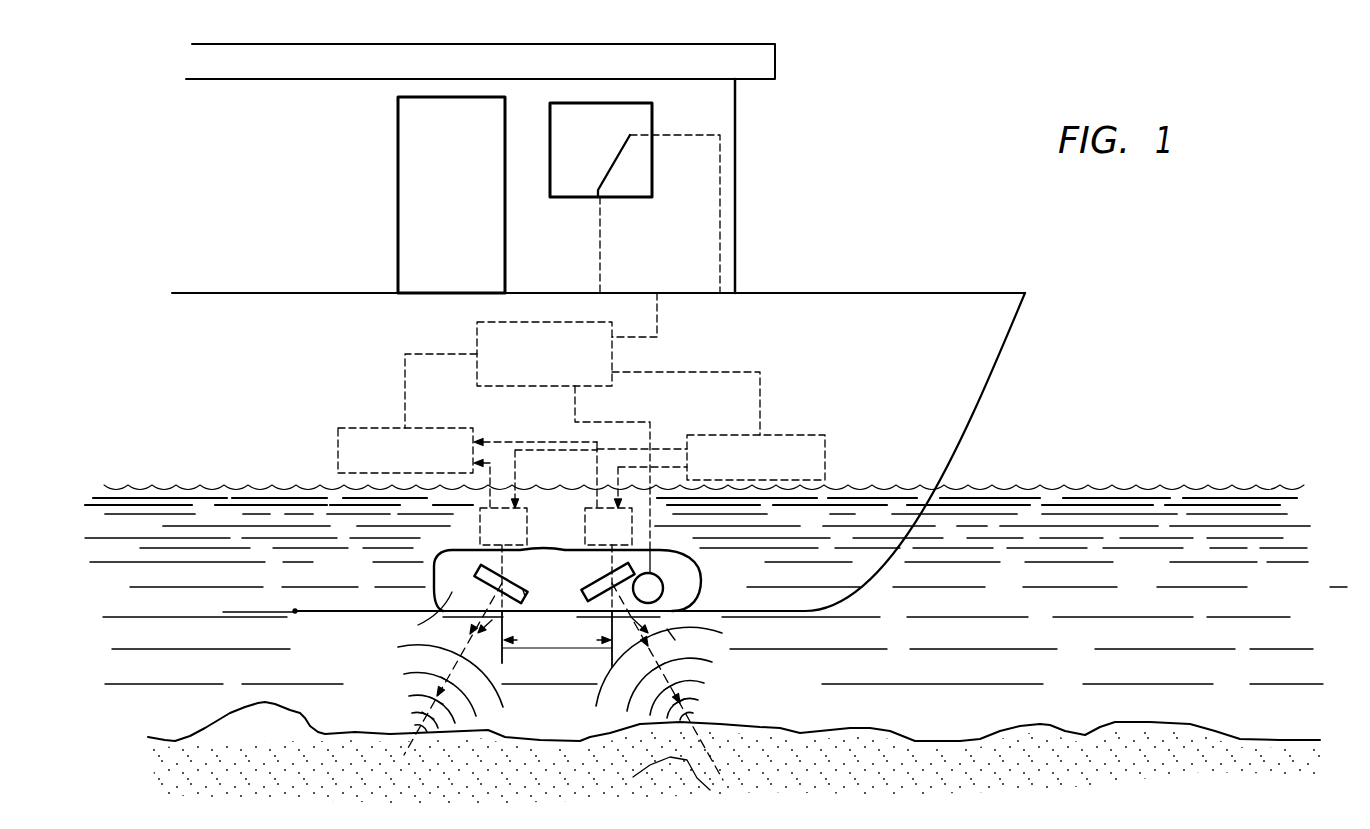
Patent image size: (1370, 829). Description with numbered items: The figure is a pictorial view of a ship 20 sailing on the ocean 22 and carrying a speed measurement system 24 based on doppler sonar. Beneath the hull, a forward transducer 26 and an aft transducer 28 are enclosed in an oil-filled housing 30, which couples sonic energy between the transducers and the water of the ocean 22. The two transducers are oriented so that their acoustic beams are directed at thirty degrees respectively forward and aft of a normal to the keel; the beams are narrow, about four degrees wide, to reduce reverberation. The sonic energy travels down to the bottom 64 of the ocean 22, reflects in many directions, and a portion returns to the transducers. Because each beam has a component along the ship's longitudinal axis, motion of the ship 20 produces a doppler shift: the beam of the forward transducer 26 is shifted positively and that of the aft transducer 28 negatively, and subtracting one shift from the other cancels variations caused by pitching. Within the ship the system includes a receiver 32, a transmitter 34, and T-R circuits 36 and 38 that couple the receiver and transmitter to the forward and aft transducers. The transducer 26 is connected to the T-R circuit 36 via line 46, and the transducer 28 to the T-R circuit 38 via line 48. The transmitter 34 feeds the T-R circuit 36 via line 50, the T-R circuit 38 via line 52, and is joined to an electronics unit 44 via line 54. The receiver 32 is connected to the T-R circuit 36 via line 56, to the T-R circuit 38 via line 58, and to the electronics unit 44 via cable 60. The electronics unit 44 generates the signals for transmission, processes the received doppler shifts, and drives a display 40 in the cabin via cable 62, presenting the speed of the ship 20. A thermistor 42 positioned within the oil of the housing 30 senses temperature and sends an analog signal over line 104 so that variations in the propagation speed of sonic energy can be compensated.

The ship 20 is at (1013, 323).
The ocean 22 is at (1146, 581).
The speed measurement system 24 is at (151, 155).
The forward transducer 26 is at (575, 632).
The aft transducer 28 is at (523, 588).
The oil-filled housing 30 is at (692, 554).
The receiver 32 is at (354, 426).
The transmitter 34 is at (830, 455).
The T-R circuit 36 is at (585, 524).
The T-R circuit 38 is at (528, 527).
The display 40 is at (615, 157).
The thermistor 42 is at (658, 574).
The electronics unit 44 is at (477, 332).
The line 46 is at (610, 563).
The line 48 is at (504, 562).
The line 50 is at (645, 468).
The line 52 is at (662, 447).
The line 54 is at (765, 405).
The line 56 is at (594, 461).
The line 58 is at (485, 460).
The cable 60 is at (405, 378).
The cable 62 is at (658, 320).
The bottom 64 is at (1032, 786).
The line 104 is at (580, 414).